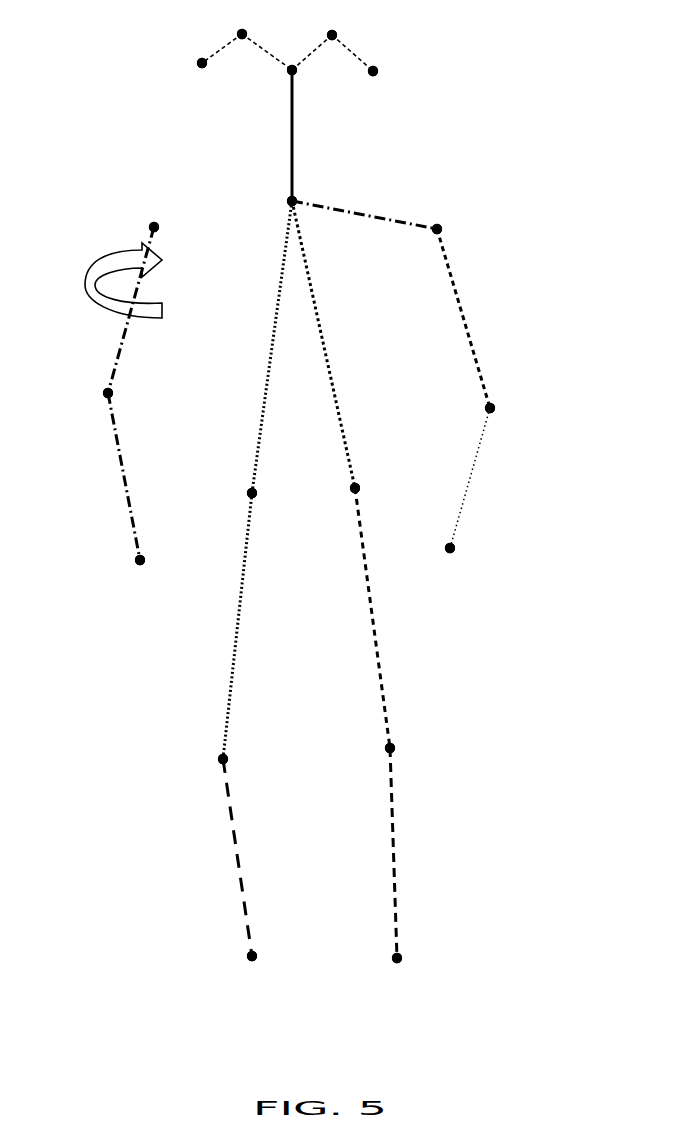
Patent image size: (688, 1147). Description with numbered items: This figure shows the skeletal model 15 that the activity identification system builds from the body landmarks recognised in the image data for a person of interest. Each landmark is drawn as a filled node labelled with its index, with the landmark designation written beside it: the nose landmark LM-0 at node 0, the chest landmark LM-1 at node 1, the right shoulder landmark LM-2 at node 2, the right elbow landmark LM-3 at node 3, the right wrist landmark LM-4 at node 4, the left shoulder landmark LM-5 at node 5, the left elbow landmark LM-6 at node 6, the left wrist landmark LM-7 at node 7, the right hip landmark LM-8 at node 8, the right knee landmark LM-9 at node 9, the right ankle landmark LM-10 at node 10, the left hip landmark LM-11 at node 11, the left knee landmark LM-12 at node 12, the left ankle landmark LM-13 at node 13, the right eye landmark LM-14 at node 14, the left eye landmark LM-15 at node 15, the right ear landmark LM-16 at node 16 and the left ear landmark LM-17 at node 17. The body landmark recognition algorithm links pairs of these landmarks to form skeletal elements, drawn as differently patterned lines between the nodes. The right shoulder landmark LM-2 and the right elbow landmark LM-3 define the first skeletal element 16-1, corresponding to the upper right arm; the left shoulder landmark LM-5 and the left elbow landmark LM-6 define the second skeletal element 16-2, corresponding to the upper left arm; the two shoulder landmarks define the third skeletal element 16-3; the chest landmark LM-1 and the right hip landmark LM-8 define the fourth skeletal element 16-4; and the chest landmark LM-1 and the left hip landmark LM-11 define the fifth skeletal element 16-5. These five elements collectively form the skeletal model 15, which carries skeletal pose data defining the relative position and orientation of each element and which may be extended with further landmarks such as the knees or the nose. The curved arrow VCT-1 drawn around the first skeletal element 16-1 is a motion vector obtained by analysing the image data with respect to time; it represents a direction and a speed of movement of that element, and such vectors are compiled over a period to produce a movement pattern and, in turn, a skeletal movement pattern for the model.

The skeletal model 15 is at (592, 50).
The nose landmark node 0 is at (285, 79).
The chest landmark node 1 is at (285, 191).
The right shoulder landmark node 2 is at (145, 227).
The right elbow landmark node 3 is at (99, 393).
The right wrist landmark node 4 is at (131, 560).
The left shoulder landmark node 5 is at (448, 228).
The left elbow landmark node 6 is at (500, 408).
The left wrist landmark node 7 is at (441, 548).
The right hip landmark node 8 is at (242, 493).
The right knee landmark node 9 is at (213, 759).
The right ankle landmark node 10 is at (236, 956).
The left hip landmark node 11 is at (371, 488).
The left knee landmark node 12 is at (406, 748).
The left ankle landmark node 13 is at (413, 958).
The right eye landmark node 14 is at (244, 21).
The right ear landmark node 16 is at (186, 63).
The left ear landmark node 17 is at (390, 71).
The nose landmark LM-0 is at (296, 72).
The chest landmark LM-1 is at (296, 201).
The right shoulder landmark LM-2 is at (153, 225).
The right elbow landmark LM-3 is at (107, 392).
The right wrist landmark LM-4 is at (144, 560).
The left shoulder landmark LM-5 is at (440, 226).
The left elbow landmark LM-6 is at (494, 406).
The left wrist landmark LM-7 is at (454, 548).
The right hip landmark LM-8 is at (249, 491).
The right knee landmark LM-9 is at (221, 756).
The right ankle landmark LM-10 is at (252, 960).
The left hip landmark LM-11 is at (358, 486).
The left knee landmark LM-12 is at (393, 746).
The left ankle landmark LM-13 is at (397, 962).
The right eye landmark LM-14 is at (238, 34).
The left eye landmark LM-15 is at (337, 34).
The right ear landmark LM-16 is at (202, 67).
The left ear landmark LM-17 is at (376, 74).
The first skeletal element 16-1 is at (118, 362).
The second skeletal element 16-2 is at (458, 298).
The third skeletal element 16-3 is at (365, 213).
The fourth skeletal element 16-4 is at (277, 348).
The fifth skeletal element 16-5 is at (327, 352).
The motion vector VCT-1 is at (92, 280).